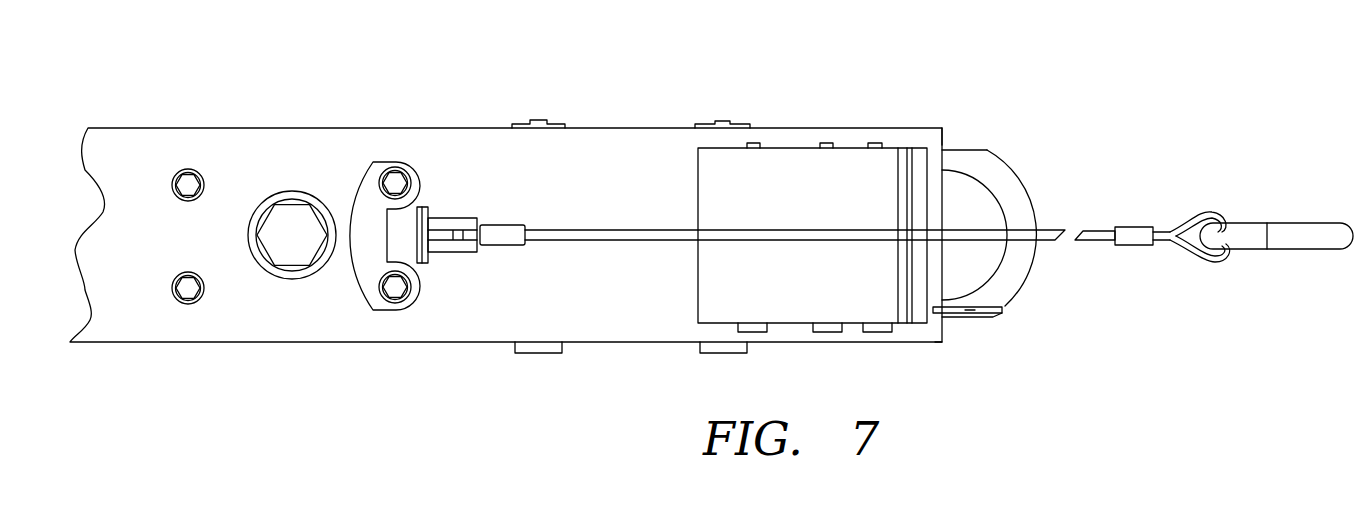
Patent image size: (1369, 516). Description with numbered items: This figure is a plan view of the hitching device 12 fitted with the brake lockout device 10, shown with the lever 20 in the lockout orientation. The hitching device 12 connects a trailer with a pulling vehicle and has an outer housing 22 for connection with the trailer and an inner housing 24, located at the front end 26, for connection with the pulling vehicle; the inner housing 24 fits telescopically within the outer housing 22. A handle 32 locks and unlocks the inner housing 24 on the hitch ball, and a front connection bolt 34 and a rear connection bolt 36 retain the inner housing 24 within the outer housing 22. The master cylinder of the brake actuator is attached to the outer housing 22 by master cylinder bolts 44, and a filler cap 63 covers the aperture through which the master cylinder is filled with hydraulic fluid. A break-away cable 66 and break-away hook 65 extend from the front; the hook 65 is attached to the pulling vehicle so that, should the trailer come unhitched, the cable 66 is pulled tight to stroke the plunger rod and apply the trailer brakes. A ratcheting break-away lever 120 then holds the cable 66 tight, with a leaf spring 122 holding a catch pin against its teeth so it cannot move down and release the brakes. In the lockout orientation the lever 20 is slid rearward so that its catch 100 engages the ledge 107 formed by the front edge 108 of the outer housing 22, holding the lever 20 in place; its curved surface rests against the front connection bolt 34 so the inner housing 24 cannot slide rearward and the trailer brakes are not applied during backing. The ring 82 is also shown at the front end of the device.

The brake lockout device 10 is at (1047, 382).
The hitching device 12 is at (552, 82).
The lever 20 is at (1003, 310).
The outer housing 22 is at (840, 128).
The inner housing 24 is at (982, 150).
The front end 26 is at (1032, 197).
The handle 32 is at (771, 157).
The front connection bolt 34 is at (723, 353).
The rear connection bolt 36 is at (537, 353).
The master cylinder bolts 44 is at (188, 178).
The filler cap 63 is at (290, 228).
The break-away hook 65 is at (1293, 229).
The break-away cable 66 is at (1092, 232).
The ring opening 82 is at (992, 170).
The catch 100 is at (970, 313).
The ledge 107 is at (943, 138).
The front edge 108 is at (948, 343).
The ratcheting break-away lever 120 is at (443, 223).
The leaf spring 122 is at (368, 203).